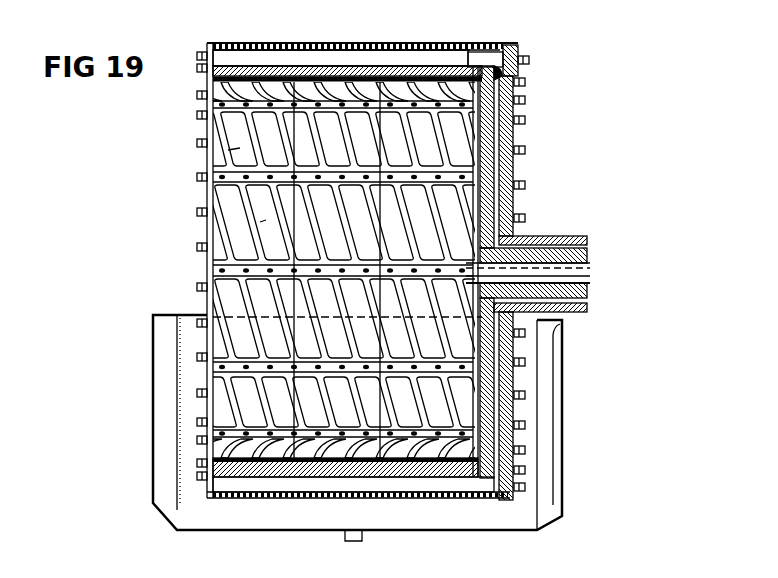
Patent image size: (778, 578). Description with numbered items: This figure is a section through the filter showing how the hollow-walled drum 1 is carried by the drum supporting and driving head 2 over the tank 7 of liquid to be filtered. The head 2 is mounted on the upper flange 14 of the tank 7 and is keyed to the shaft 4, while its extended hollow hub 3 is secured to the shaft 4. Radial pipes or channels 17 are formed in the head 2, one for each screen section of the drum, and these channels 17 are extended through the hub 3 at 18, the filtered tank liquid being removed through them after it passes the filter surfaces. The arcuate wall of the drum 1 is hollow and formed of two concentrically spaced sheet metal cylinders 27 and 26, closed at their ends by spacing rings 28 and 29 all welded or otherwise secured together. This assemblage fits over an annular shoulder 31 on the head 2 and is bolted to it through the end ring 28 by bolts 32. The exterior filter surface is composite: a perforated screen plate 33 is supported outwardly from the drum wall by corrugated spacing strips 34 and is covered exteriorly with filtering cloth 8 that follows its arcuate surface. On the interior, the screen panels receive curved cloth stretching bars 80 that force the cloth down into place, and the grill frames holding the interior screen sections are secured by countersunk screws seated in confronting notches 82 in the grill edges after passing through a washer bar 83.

The cylinder or drum 1 is at (383, 62).
The head 2 is at (526, 114).
The hub 3 is at (535, 240).
The shaft 4 is at (592, 270).
The tank 7 is at (538, 457).
The exterior filtering cloth 8 is at (433, 48).
The upper flange 14 is at (553, 332).
The radial pipes or channels 17 is at (495, 176).
The channel extensions 18 is at (588, 250).
The inner sheet metal cylinder 26 is at (312, 70).
The outer sheet metal cylinder 27 is at (297, 52).
The end spacing ring 28 is at (500, 61).
The end spacing ring 29 is at (340, 58).
The annular shoulder 31 is at (526, 78).
The bolts 32 is at (529, 60).
The perforated screen plate 33 is at (337, 46).
The corrugated spacing strips 34 is at (370, 53).
The cloth stretching bars 80 is at (297, 150).
The notches 82 is at (242, 180).
The washer bar 83 is at (230, 270).